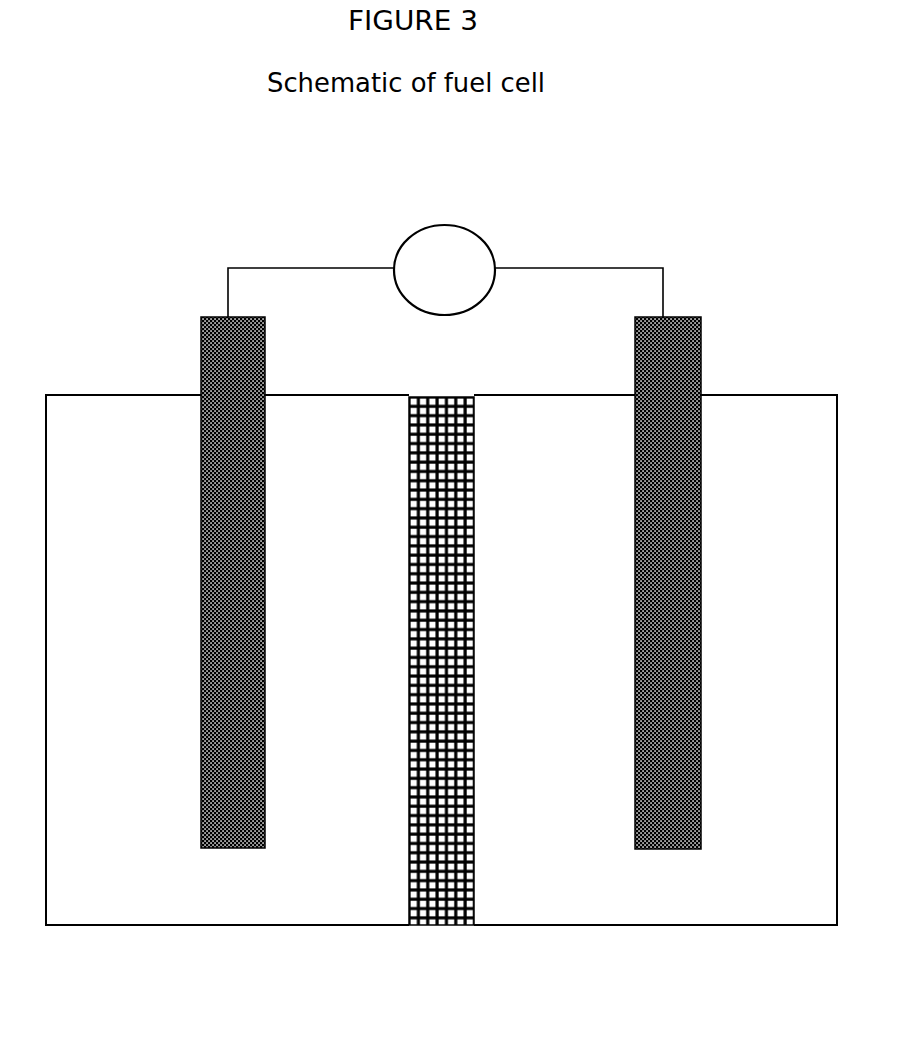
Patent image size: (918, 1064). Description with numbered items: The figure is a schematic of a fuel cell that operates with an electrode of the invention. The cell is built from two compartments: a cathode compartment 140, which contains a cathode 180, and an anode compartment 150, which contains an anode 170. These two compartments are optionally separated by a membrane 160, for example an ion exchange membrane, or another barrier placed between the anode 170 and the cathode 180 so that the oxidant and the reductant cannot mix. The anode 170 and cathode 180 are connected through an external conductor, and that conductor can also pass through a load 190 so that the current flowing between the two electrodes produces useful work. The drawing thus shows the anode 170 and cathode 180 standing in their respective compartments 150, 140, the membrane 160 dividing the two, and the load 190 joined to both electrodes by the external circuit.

The cathode compartment 140 is at (655, 704).
The anode compartment 150 is at (227, 698).
The membrane 160 is at (490, 661).
The anode 170 is at (182, 612).
The cathode 180 is at (712, 613).
The load 190 is at (445, 271).